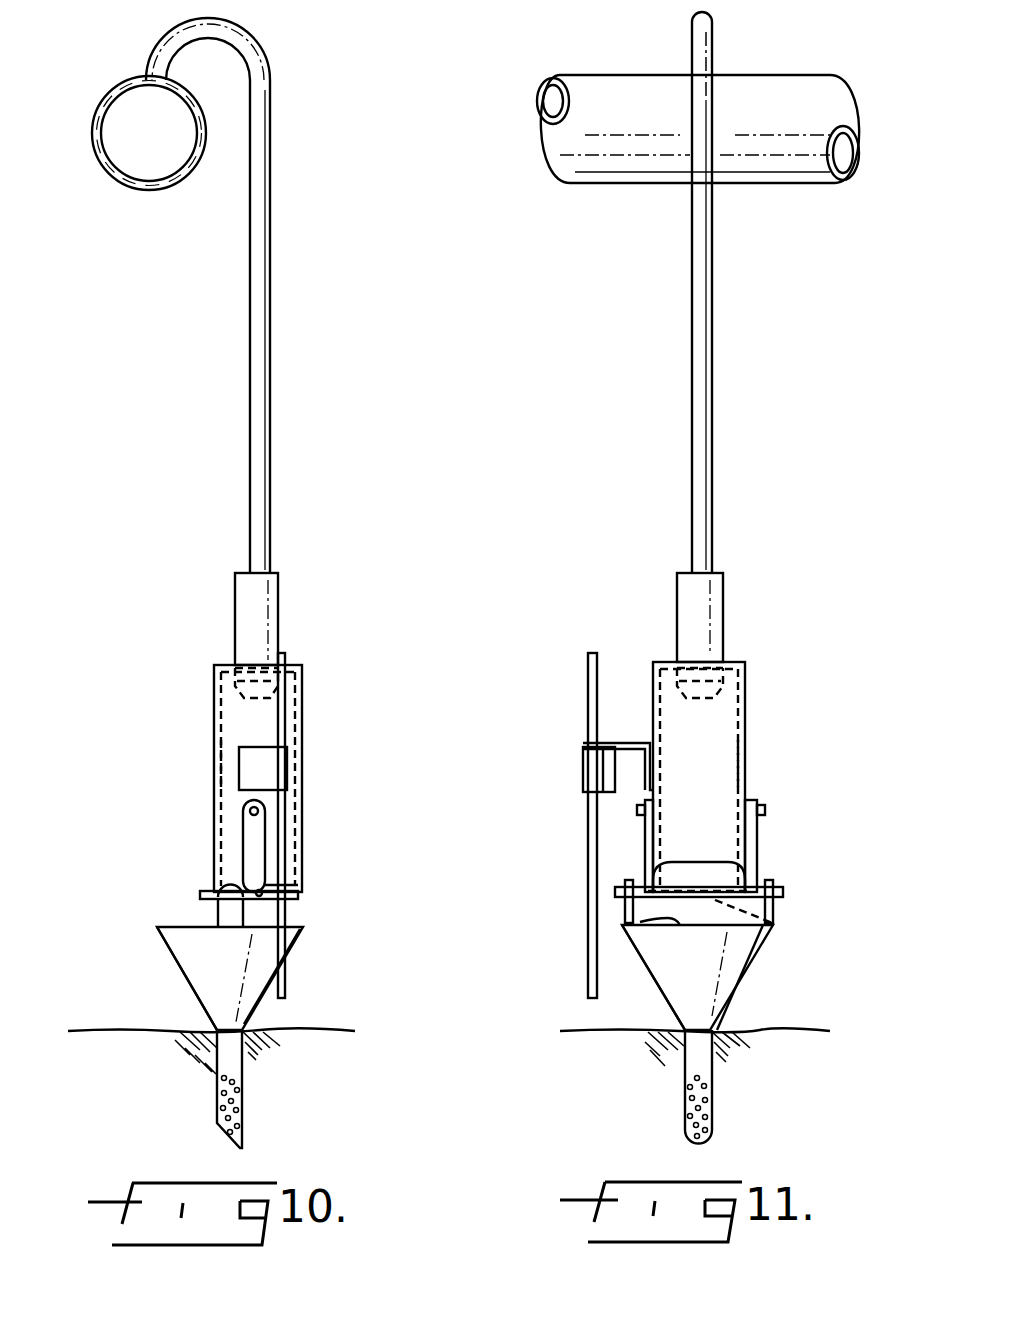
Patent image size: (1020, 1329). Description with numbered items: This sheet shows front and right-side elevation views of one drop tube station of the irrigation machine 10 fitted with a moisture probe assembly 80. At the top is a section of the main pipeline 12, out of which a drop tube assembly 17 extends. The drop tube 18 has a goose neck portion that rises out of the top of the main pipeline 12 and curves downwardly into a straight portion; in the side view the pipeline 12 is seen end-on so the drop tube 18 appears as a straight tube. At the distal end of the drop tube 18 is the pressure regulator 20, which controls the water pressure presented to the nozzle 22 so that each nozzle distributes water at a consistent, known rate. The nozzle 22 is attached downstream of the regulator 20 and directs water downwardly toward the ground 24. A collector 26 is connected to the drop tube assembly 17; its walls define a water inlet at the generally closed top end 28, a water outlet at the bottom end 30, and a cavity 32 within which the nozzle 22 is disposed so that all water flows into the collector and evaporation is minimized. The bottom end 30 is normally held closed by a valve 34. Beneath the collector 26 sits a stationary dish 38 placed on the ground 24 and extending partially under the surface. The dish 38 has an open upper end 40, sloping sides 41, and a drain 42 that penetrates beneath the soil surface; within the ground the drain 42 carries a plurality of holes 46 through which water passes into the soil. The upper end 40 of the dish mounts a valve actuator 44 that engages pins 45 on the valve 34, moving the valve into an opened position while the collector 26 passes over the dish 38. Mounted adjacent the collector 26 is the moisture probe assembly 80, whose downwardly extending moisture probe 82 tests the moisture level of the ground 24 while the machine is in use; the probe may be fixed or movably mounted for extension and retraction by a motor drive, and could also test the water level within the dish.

In FIG. 10, the irrigation machine 10 is at (132, 76).
In FIG. 11, the irrigation machine 10 is at (646, 68).
In FIG. 10, the main pipeline 12 is at (97, 114).
In FIG. 11, the main pipeline 12 is at (770, 78).
In FIG. 10, the drop tube assembly 17 is at (278, 268).
In FIG. 11, the drop tube assembly 17 is at (716, 278).
In FIG. 10, the drop tube 18 is at (272, 380).
In FIG. 11, the drop tube 18 is at (714, 422).
In FIG. 10, the pressure regulator 20 is at (278, 596).
In FIG. 11, the pressure regulator 20 is at (716, 600).
In FIG. 10, the nozzle 22 is at (236, 692).
In FIG. 11, the nozzle 22 is at (732, 694).
In FIG. 10, the ground 24 is at (96, 1000).
In FIG. 11, the ground 24 is at (828, 1028).
In FIG. 10, the collector 26 is at (302, 712).
In FIG. 11, the collector 26 is at (745, 740).
In FIG. 10, the top end 28 is at (240, 662).
In FIG. 11, the top end 28 is at (724, 646).
In FIG. 10, the bottom end 30 is at (296, 884).
In FIG. 11, the bottom end 30 is at (774, 924).
In FIG. 10, the cavity 32 is at (224, 757).
In FIG. 11, the cavity 32 is at (740, 774).
In FIG. 10, the valve 34 is at (286, 875).
In FIG. 11, the valve 34 is at (650, 912).
In FIG. 10, the dish 38 is at (310, 947).
In FIG. 11, the dish 38 is at (750, 968).
In FIG. 10, the open upper end 40 is at (172, 925).
In FIG. 11, the open upper end 40 is at (672, 920).
In FIG. 10, the sides 41 is at (166, 952).
In FIG. 11, the sides 41 is at (670, 1002).
In FIG. 10, the drain 42 is at (228, 1138).
In FIG. 11, the drain 42 is at (702, 1142).
In FIG. 10, the valve actuator 44 is at (228, 885).
In FIG. 11, the valve actuator 44 is at (628, 880).
In FIG. 10, the pins 45 is at (270, 898).
In FIG. 10, the holes 46 is at (222, 1090).
In FIG. 11, the holes 46 is at (690, 1102).
In FIG. 10, the moisture probe assembly 80 is at (292, 768).
In FIG. 11, the moisture probe assembly 80 is at (582, 768).
In FIG. 10, the moisture probe 82 is at (288, 987).
In FIG. 11, the moisture probe 82 is at (590, 840).